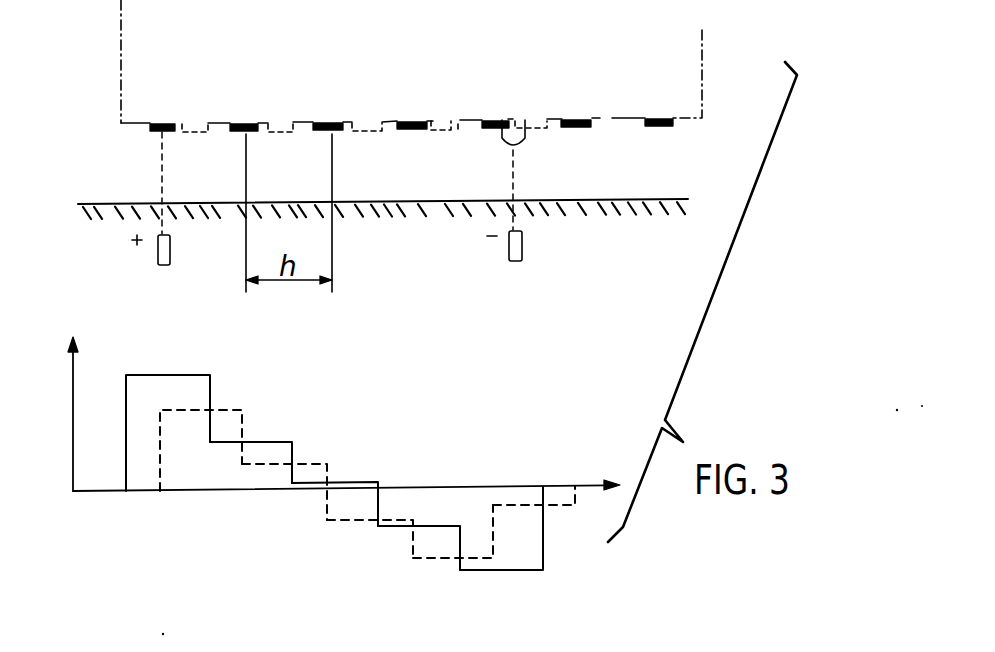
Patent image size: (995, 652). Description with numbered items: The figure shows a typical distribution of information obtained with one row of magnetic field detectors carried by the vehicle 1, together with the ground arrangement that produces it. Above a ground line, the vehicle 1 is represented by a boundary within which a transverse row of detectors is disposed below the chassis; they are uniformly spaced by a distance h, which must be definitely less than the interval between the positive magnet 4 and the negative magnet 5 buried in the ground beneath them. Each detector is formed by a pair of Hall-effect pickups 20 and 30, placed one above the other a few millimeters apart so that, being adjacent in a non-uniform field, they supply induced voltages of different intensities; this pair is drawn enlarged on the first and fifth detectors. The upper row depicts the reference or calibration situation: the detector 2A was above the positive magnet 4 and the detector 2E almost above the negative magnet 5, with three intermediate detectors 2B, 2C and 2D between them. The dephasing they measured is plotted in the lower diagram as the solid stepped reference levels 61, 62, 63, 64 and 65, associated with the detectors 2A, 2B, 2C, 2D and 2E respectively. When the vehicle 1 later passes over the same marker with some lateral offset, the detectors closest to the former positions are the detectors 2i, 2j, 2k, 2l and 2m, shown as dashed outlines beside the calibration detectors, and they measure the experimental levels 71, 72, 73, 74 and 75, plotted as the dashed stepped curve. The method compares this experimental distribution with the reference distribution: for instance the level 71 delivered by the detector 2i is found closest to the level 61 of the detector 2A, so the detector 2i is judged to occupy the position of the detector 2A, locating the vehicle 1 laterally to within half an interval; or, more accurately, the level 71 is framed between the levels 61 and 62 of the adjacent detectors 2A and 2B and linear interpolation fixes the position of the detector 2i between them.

The vehicle 1 is at (704, 58).
The detector 2A is at (172, 123).
The detector 2B is at (243, 123).
The detector 2C is at (334, 121).
The detector 2D is at (416, 120).
The detector 2E is at (504, 119).
The detector 2i is at (187, 132).
The detector 2j is at (283, 130).
The detector 2k is at (374, 131).
The detector 2l is at (447, 128).
The detector 2m is at (540, 127).
The Hall-effect pickup 20 is at (155, 122).
The Hall-effect pickup 30 is at (338, 129).
The positive magnet 4 is at (160, 259).
The negative magnet 5 is at (522, 250).
The reference level 61 is at (180, 375).
The reference level 62 is at (277, 442).
The reference level 63 is at (347, 481).
The reference level 64 is at (431, 523).
The reference level 65 is at (528, 568).
The experimental level 71 is at (193, 412).
The experimental level 72 is at (277, 467).
The experimental level 73 is at (357, 525).
The experimental level 74 is at (445, 560).
The experimental level 75 is at (566, 507).